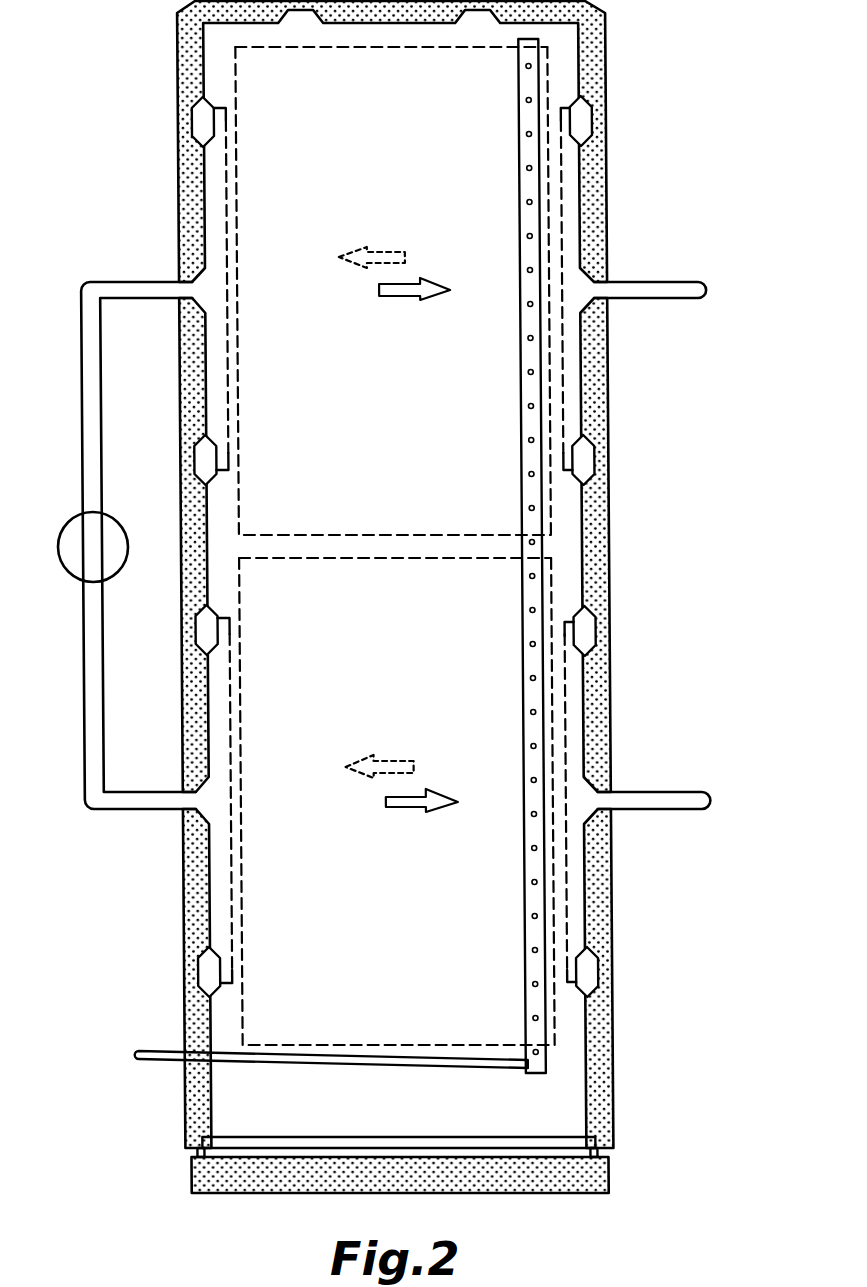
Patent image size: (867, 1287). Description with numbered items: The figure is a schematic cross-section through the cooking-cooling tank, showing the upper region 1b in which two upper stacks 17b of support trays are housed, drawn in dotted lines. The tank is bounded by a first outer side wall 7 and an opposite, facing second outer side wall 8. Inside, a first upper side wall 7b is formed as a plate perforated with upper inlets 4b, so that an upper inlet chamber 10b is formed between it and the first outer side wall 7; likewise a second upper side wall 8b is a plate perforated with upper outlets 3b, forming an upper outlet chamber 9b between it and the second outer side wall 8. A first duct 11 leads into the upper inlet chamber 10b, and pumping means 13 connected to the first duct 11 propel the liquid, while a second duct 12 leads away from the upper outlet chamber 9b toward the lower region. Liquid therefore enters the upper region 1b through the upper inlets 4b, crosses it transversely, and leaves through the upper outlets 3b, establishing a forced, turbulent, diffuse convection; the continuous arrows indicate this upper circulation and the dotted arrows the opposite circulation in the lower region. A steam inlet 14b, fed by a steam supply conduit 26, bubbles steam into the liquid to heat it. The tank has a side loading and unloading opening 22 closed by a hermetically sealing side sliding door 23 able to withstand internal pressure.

The upper region 1b is at (391, 510).
The upper outlets 3b is at (564, 407).
The upper inlets 4b is at (227, 345).
The first outer side wall 7 is at (199, 542).
The first upper side wall 7b is at (226, 227).
The second outer side wall 8 is at (578, 552).
The second upper side wall 8b is at (558, 247).
The upper outlet chamber 9b is at (571, 173).
The upper inlet chamber 10b is at (219, 186).
The first duct 11 is at (138, 287).
The second duct 12 is at (653, 283).
The pumping means 13 is at (56, 532).
The steam inlet 14b is at (527, 372).
The upper stacks 17b is at (367, 47).
The side loading and unloading opening 22 is at (392, 1133).
The side sliding door 23 is at (303, 1183).
The steam supply conduit 26 is at (164, 1059).